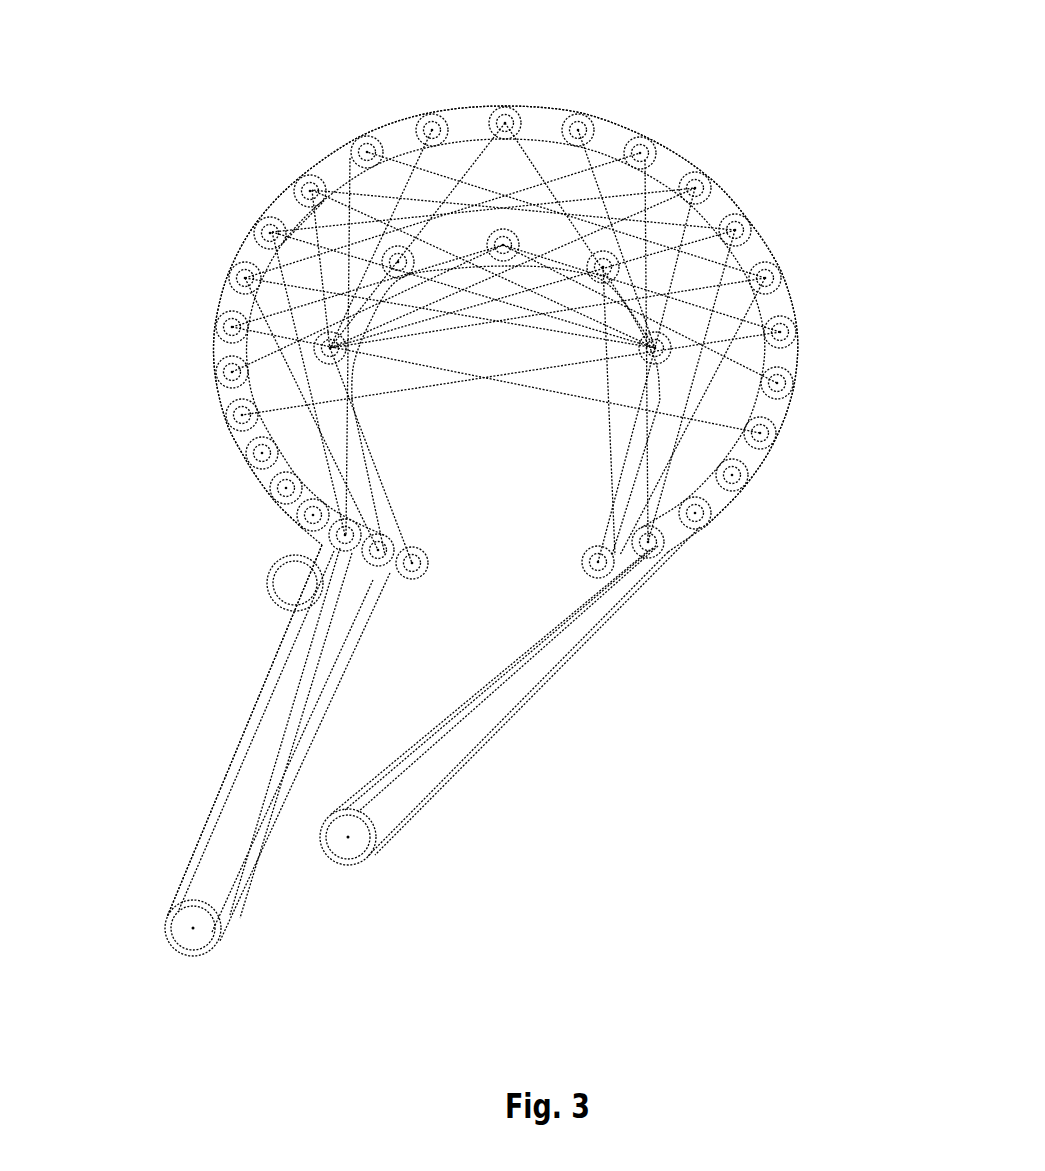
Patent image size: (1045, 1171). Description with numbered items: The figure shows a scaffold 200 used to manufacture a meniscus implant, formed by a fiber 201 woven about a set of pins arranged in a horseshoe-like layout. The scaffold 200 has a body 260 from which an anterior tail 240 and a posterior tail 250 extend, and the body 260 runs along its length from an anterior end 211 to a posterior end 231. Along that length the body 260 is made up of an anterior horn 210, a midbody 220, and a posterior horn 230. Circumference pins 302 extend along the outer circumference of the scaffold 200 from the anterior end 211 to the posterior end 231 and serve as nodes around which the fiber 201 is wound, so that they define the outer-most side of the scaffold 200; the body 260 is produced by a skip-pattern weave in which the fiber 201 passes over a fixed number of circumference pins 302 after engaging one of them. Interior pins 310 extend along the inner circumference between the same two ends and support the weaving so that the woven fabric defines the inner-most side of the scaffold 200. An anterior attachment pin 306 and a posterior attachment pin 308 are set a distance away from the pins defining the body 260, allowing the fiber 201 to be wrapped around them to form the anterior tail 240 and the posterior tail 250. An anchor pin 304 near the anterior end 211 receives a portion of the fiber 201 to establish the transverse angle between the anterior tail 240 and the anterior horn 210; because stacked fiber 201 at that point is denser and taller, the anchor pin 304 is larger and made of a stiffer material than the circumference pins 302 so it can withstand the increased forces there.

The scaffold 200 is at (148, 67).
The fiber 201 is at (300, 220).
The anterior horn 210 is at (233, 350).
The anterior end 211 is at (400, 575).
The midbody 220 is at (582, 158).
The posterior horn 230 is at (747, 405).
The posterior end 231 is at (598, 578).
The anterior tail 240 is at (272, 763).
The posterior tail 250 is at (530, 678).
The body 260 is at (415, 90).
The circumference pins 302 is at (740, 232).
The anchor pin 304 is at (295, 583).
The anterior attachment pin 306 is at (193, 928).
The posterior attachment pin 308 is at (348, 837).
The interior pins 310 is at (658, 347).